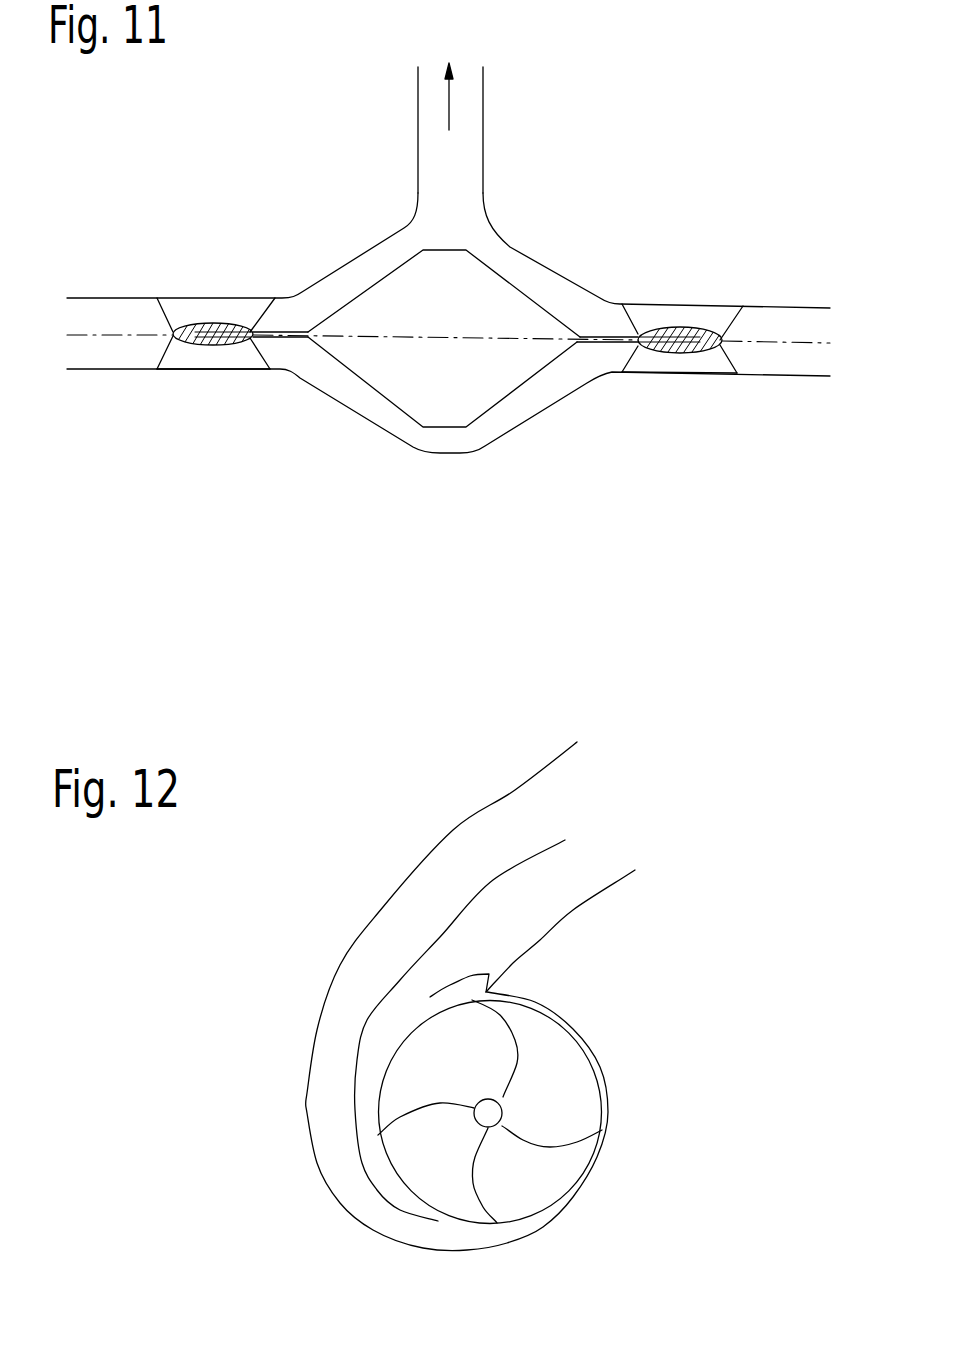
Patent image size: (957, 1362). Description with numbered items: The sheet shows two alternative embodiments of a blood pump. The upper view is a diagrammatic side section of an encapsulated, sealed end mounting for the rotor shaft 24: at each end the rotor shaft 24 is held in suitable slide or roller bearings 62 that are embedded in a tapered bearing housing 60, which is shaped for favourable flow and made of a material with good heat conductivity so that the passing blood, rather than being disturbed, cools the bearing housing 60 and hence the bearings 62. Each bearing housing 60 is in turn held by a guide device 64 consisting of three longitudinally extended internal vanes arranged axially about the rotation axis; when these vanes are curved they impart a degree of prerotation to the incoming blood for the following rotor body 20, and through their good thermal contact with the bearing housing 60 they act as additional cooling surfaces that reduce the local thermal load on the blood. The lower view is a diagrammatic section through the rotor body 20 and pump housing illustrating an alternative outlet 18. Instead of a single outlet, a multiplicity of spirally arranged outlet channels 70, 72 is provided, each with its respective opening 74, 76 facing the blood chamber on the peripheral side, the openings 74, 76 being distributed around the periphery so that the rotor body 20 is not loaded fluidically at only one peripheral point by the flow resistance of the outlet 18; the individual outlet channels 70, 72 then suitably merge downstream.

In FIG. 11, the outlet 18 is at (472, 98).
In FIG. 11, the rotor body 20 is at (465, 388).
In FIG. 12, the rotor body 20 is at (563, 1065).
In FIG. 11, the rotor shaft 24 is at (295, 328).
In FIG. 12, the rotor shaft 24 is at (492, 1120).
In FIG. 11, the bearing housing 60 is at (192, 347).
In FIG. 11, the bearing 62 is at (210, 330).
In FIG. 11, the guide device 64 is at (237, 358).
In FIG. 12, the outlet channel 70 is at (423, 909).
In FIG. 12, the outlet channel 72 is at (547, 903).
In FIG. 12, the opening 74 is at (460, 970).
In FIG. 12, the opening 76 is at (463, 1225).